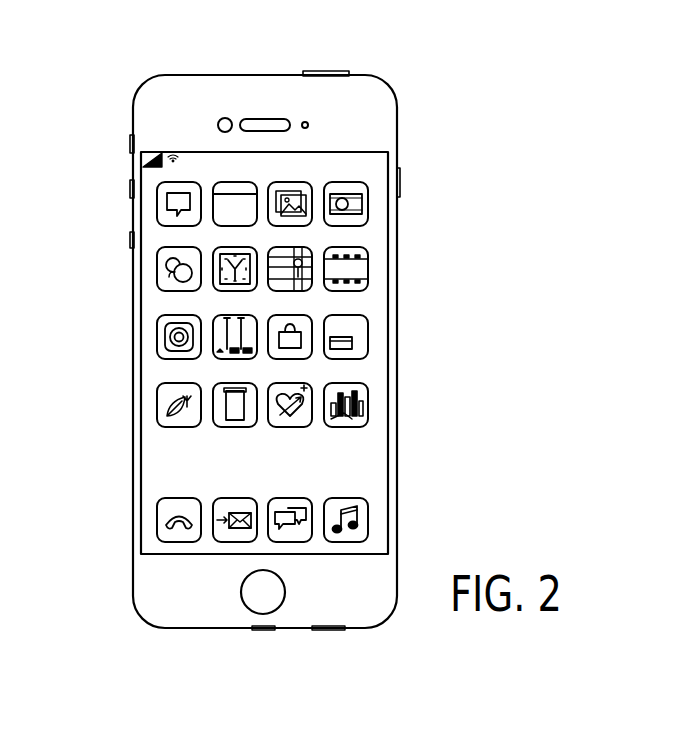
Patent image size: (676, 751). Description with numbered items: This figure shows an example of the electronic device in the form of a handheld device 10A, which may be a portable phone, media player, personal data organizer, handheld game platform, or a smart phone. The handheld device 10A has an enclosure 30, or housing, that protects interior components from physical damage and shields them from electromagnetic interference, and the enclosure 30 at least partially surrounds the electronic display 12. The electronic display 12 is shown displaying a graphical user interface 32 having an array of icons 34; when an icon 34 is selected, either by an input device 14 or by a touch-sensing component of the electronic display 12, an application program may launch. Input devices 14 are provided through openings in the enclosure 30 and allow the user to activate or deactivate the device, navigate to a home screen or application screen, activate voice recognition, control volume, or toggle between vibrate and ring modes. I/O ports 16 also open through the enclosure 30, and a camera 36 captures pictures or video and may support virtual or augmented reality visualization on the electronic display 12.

The handheld device 10A is at (125, 65).
The electronic display 12 is at (388, 456).
The input devices 14 is at (330, 70).
The I/O ports 16 is at (263, 629).
The enclosure 30 is at (397, 137).
The graphical user interface 32 is at (294, 347).
The icon 34 is at (309, 425).
The camera 36 is at (219, 121).